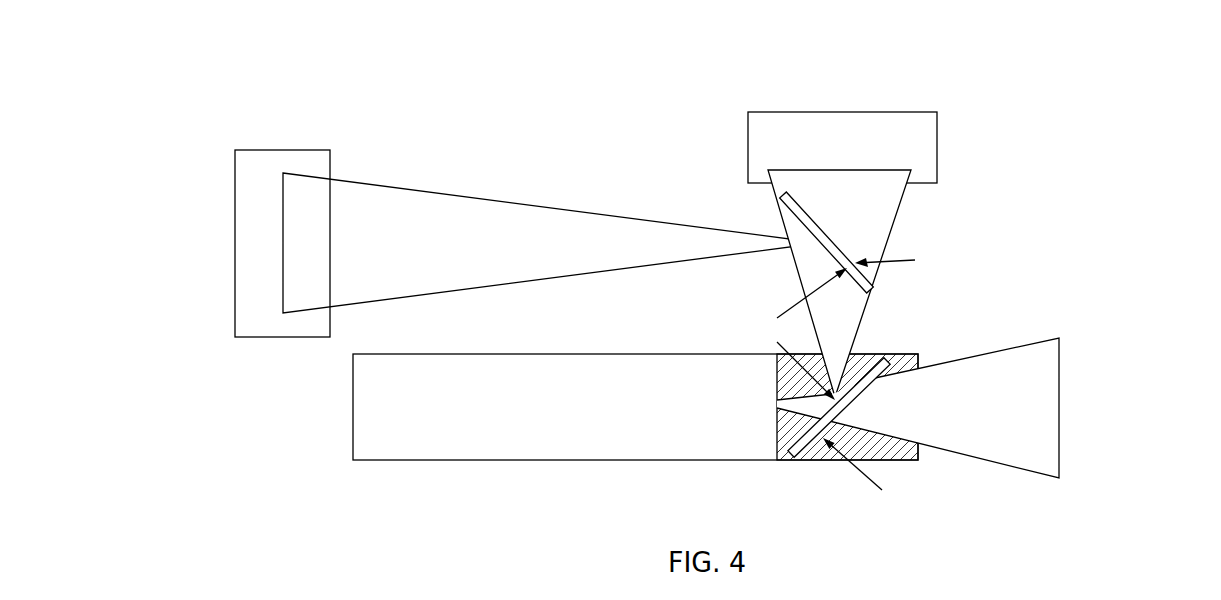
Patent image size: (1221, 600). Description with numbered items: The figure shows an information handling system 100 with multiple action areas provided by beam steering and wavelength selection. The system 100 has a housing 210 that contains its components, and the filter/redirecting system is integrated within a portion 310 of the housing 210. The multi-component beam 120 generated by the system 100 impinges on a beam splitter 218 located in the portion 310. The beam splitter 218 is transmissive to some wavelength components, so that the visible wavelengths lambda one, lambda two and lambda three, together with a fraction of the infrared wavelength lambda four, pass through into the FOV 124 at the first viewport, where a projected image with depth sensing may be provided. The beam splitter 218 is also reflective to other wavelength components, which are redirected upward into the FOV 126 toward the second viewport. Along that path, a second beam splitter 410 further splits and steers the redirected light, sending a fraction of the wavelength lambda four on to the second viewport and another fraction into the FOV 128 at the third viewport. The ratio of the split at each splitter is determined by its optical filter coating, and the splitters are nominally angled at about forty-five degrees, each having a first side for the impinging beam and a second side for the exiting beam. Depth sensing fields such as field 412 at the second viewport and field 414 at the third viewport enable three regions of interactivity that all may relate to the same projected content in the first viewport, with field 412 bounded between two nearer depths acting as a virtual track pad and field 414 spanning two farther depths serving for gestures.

The information handling system 100 is at (291, 48).
The multi-component beam 120 is at (777, 410).
The FOV 124 is at (1060, 345).
The FOV 126 is at (904, 195).
The FOV 128 is at (418, 190).
The housing 210 is at (400, 354).
The beam splitter 218 is at (790, 455).
The portion 310 is at (918, 354).
The beam splitter 410 is at (870, 285).
The field 412 is at (748, 130).
The field 414 is at (235, 303).